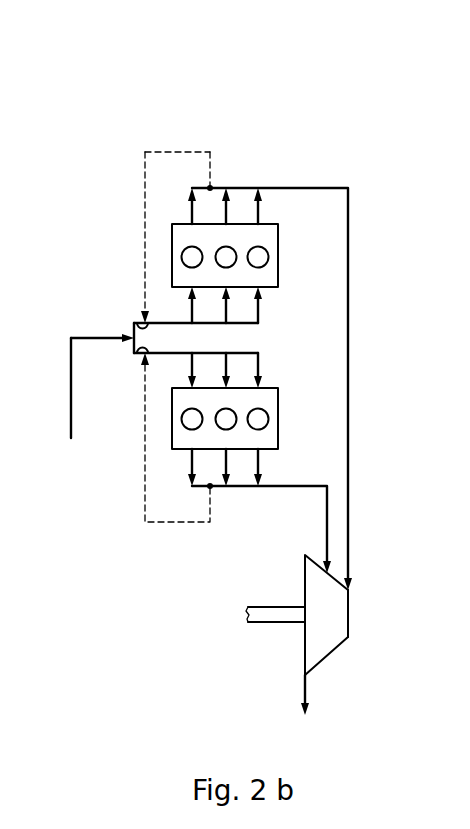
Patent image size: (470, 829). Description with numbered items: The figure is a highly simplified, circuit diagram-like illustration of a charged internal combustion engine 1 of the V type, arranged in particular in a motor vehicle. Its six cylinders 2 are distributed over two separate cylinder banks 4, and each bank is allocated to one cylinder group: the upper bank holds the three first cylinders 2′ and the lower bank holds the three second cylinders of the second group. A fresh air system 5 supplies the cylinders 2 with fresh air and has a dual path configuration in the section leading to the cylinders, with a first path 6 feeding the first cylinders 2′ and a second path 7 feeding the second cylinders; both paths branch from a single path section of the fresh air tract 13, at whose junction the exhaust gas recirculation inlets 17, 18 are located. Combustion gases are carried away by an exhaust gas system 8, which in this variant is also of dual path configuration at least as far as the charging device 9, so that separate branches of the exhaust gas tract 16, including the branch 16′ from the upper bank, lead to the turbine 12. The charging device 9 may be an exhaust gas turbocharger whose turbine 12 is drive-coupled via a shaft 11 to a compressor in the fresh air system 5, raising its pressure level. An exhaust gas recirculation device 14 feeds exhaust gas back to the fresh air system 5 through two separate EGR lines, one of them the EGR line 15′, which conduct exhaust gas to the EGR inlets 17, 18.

The internal combustion engine 1 is at (339, 128).
The cylinders 2 is at (173, 328).
The first cylinders 2′ is at (258, 255).
The cylinder banks 4 is at (278, 257).
The fresh air system 5 is at (62, 352).
The first path 6 is at (245, 323).
The second path 7 is at (247, 353).
The exhaust gas system 8 is at (342, 522).
The charging device 9 is at (362, 607).
The shaft 11 is at (268, 618).
The turbine 12 is at (327, 638).
The fresh air tract 13 is at (71, 410).
The exhaust gas recirculation device 14 is at (186, 140).
The first EGR line 15′ is at (143, 172).
The exhaust gas tract 16 is at (14, 573).
The first exhaust gas tract branch 16′ is at (348, 388).
The first EGR inlet 17 is at (131, 322).
The second EGR inlet 18 is at (131, 352).